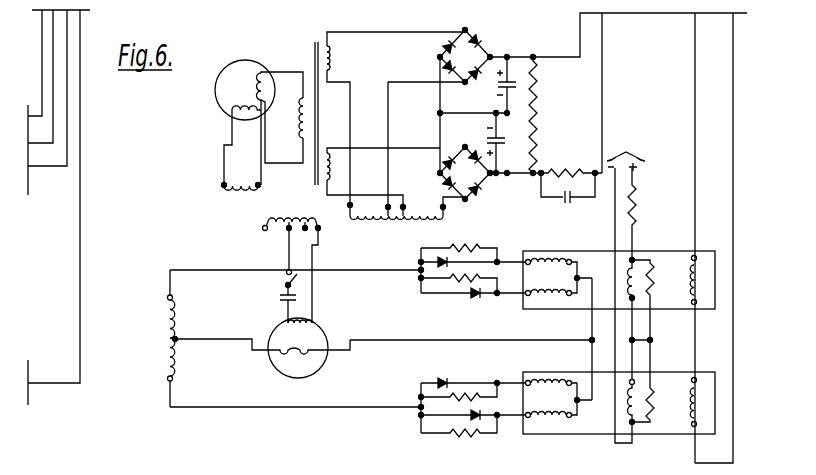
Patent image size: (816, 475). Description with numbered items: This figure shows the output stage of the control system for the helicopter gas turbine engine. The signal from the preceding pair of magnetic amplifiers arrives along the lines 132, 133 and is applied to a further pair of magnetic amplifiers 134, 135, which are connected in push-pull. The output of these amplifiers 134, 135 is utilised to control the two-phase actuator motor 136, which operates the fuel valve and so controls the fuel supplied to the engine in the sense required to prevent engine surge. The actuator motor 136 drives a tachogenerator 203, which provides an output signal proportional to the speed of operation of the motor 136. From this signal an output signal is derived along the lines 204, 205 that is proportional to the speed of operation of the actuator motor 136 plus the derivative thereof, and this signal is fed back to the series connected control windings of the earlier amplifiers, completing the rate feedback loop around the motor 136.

The tachogenerator 203 is at (219, 106).
The line 204 is at (602, 77).
The line 205 is at (555, 55).
The line 132 is at (732, 195).
The line 133 is at (693, 153).
The magnetic amplifier 134 is at (670, 372).
The magnetic amplifier 135 is at (662, 250).
The two-phase actuator motor 136 is at (268, 359).